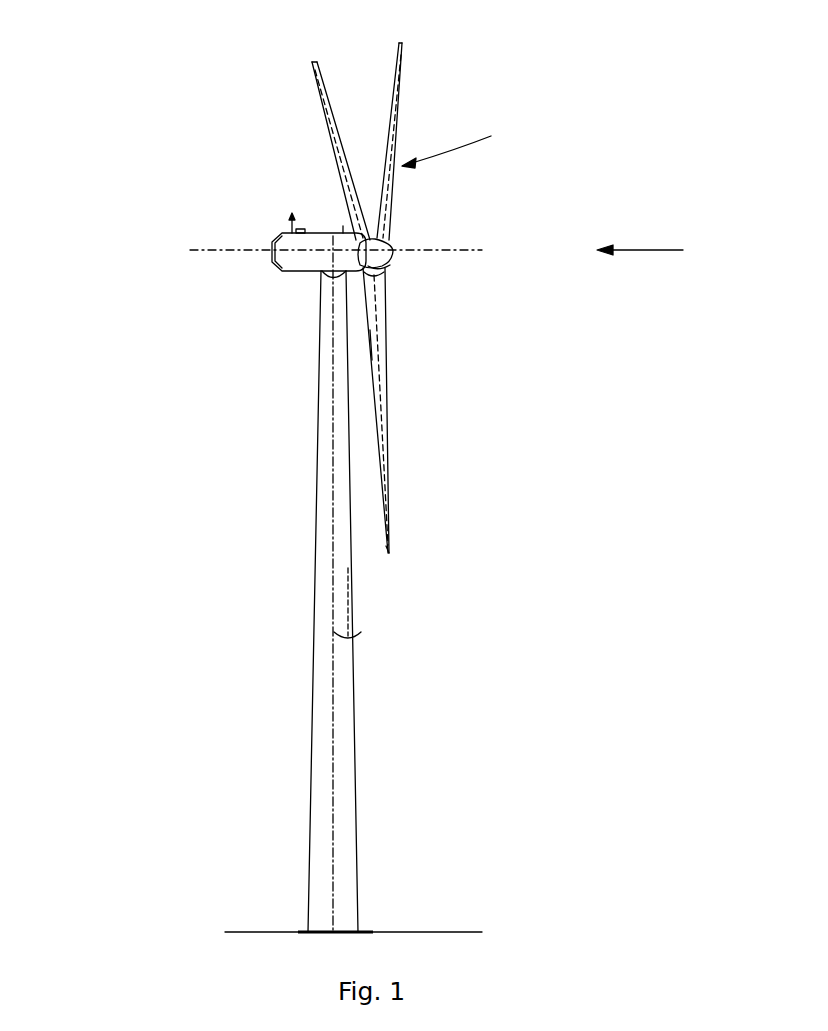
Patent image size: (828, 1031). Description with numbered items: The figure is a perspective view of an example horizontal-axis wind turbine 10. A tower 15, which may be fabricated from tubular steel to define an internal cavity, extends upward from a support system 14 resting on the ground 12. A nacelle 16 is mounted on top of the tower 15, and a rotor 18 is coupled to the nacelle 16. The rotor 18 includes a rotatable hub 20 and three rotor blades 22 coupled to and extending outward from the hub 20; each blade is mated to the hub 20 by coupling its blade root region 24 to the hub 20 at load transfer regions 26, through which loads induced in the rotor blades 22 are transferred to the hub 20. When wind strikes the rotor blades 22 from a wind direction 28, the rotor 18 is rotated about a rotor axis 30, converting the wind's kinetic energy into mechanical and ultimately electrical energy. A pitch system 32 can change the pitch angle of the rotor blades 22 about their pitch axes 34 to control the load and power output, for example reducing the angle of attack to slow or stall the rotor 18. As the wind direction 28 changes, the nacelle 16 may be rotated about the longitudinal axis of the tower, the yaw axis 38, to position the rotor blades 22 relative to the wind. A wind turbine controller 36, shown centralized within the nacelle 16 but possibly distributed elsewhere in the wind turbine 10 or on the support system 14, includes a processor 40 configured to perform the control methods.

The wind turbine 10 is at (118, 55).
The ground 12 is at (242, 931).
The support system 14 is at (301, 930).
The tower 15 is at (316, 578).
The nacelle 16 is at (292, 273).
The rotor 18 is at (463, 143).
The rotatable hub 20 is at (391, 247).
The rotor blade 22 is at (328, 118).
The blade root region 24 is at (379, 343).
The load transfer region 26 is at (384, 264).
The wind direction 28 is at (656, 249).
The rotor axis 30 is at (450, 252).
The pitch system 32 is at (378, 294).
The pitch axis 34 is at (310, 62).
The wind turbine controller 36 is at (334, 284).
The yaw axis 38 is at (356, 636).
The processor 40 is at (343, 225).